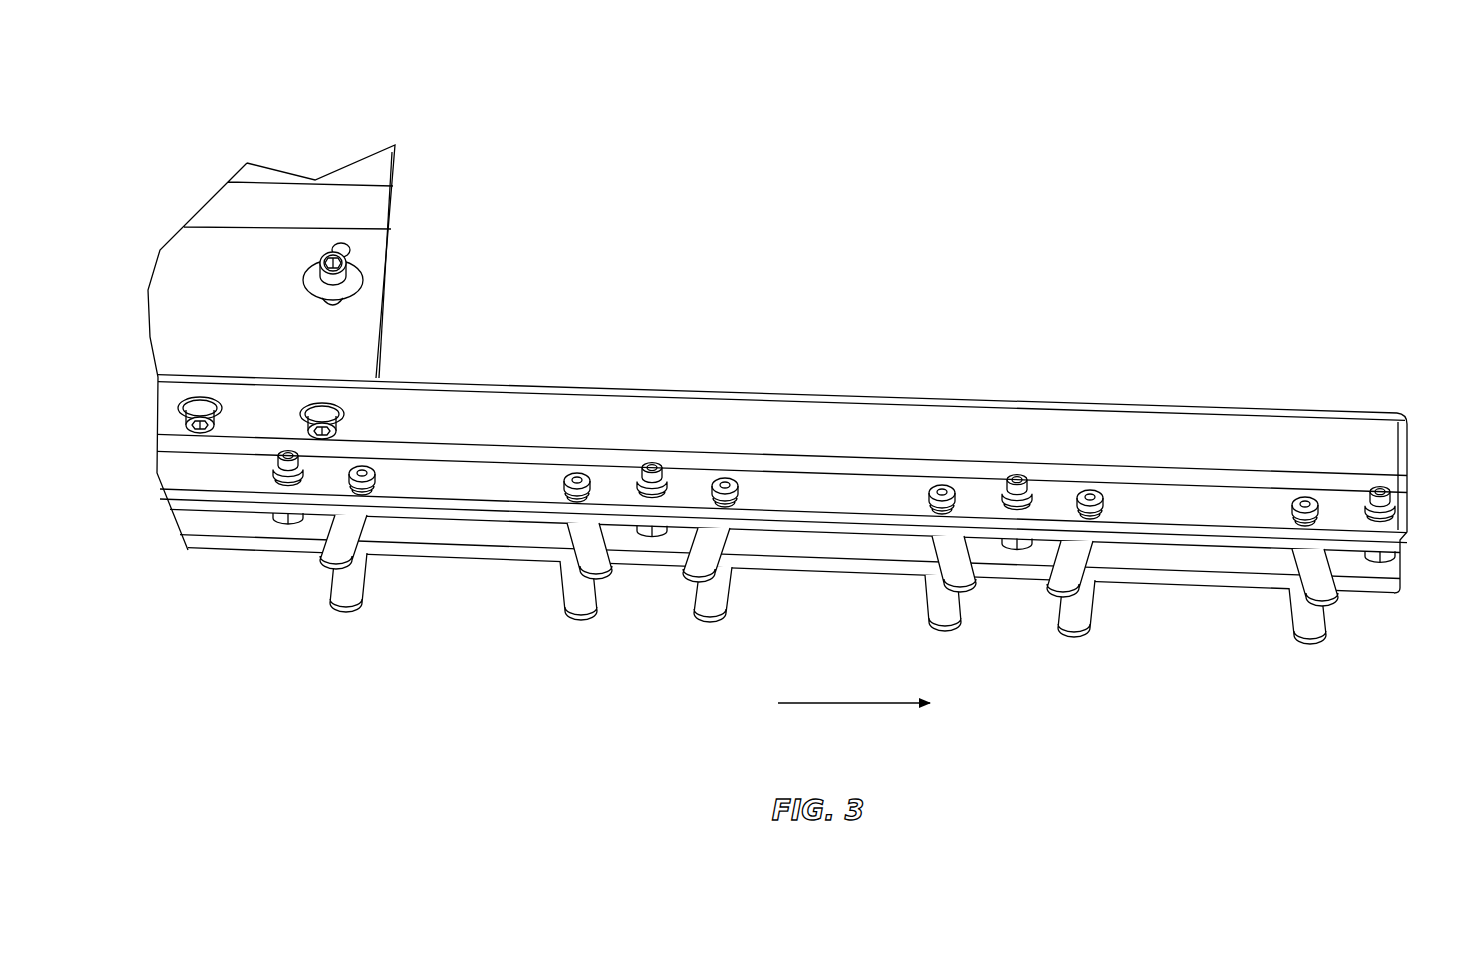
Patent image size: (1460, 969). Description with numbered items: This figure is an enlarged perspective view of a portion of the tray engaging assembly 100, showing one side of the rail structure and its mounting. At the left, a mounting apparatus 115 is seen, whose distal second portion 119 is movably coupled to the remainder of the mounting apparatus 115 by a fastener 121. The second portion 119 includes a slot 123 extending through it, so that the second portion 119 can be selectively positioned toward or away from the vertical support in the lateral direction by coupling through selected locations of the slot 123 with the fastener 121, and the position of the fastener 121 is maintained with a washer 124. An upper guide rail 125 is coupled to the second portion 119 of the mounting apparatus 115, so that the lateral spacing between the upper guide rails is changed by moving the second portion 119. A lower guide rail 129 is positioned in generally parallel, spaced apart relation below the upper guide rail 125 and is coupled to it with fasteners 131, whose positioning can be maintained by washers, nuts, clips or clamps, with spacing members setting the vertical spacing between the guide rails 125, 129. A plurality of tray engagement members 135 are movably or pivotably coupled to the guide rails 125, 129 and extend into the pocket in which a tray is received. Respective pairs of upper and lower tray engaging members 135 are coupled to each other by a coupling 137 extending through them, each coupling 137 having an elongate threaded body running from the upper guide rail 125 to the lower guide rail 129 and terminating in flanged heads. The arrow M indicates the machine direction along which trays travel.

The tray engaging assembly 100 is at (190, 99).
The mounting apparatus 115 is at (380, 333).
The second portion 119 is at (176, 336).
The fastener 121 is at (338, 276).
The slot 123 is at (350, 254).
The washer 124 is at (349, 290).
The upper guide rail 125 is at (540, 384).
The lower guide rail 129 is at (467, 566).
The fastener 131 is at (270, 458).
The tray engagement member 135 is at (335, 602).
The coupling 137 is at (378, 472).